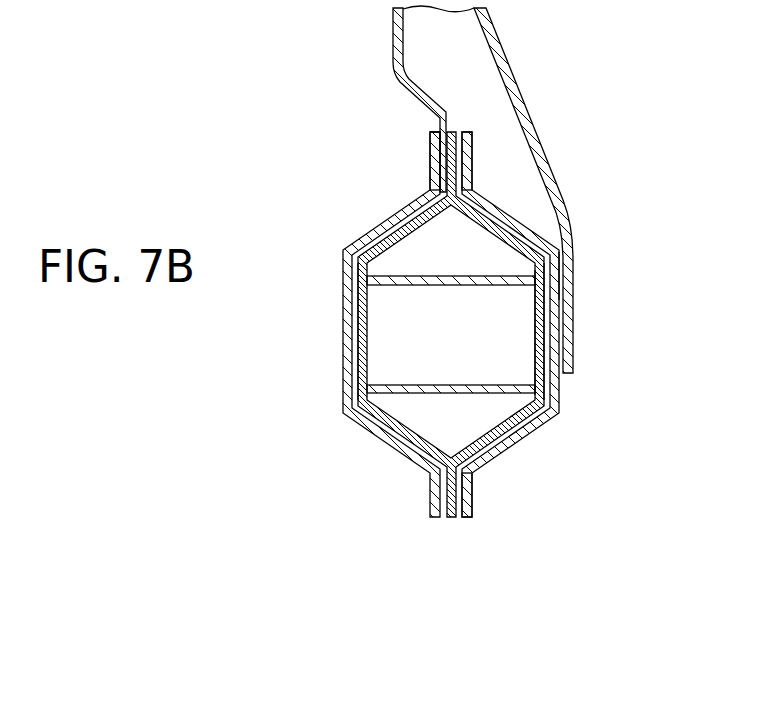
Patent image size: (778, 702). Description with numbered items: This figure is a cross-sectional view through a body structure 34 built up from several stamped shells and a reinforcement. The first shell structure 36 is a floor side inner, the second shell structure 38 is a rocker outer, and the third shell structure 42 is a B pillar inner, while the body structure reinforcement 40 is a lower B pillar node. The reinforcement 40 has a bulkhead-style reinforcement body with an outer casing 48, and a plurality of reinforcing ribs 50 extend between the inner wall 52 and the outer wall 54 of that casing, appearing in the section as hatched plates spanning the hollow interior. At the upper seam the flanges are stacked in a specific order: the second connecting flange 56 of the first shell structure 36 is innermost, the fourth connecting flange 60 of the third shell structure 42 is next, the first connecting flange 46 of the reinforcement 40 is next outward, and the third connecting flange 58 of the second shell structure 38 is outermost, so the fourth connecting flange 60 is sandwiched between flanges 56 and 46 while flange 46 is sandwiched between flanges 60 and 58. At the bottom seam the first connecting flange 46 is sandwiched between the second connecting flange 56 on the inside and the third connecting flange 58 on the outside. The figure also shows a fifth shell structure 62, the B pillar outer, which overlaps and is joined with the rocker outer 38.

The body structure 34 is at (289, 175).
The first shell structure 36 is at (343, 362).
The second shell structure 38 is at (558, 398).
The body structure reinforcement 40 is at (564, 240).
The third shell structure 42 is at (393, 44).
The first connecting flange 46 is at (455, 133).
The outer casing 48 is at (543, 320).
The reinforcing ribs 50 is at (497, 276).
The inner wall 52 is at (368, 333).
The outer wall 54 is at (533, 350).
The second connecting flange 56 is at (430, 173).
The third connecting flange 58 is at (473, 153).
The fourth connecting flange 60 is at (430, 143).
The fifth shell structure 62 is at (522, 113).